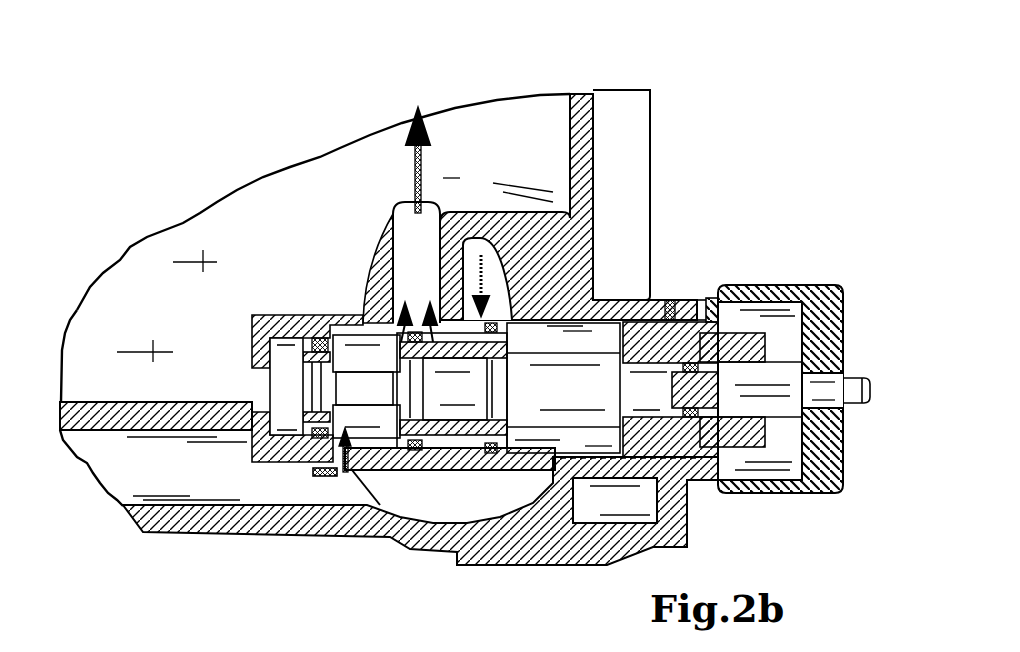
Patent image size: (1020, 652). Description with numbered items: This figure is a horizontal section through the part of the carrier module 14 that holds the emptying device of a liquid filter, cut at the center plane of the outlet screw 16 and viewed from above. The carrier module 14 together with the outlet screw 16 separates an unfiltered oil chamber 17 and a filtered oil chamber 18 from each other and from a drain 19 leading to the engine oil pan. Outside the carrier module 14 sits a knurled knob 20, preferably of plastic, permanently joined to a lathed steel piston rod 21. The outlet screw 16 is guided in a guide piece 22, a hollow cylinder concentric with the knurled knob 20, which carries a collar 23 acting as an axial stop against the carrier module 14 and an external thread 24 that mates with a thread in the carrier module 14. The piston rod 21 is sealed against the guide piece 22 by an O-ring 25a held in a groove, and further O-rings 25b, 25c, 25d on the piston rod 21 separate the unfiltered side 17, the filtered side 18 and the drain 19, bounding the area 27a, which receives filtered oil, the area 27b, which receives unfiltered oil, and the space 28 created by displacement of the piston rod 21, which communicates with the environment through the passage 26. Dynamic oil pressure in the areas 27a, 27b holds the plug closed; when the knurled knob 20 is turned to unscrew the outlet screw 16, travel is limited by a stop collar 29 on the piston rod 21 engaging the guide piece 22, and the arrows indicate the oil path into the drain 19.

The carrier module 14 is at (582, 100).
The outlet screw 16 is at (780, 173).
The unfiltered oil chamber 17 is at (134, 479).
The filtered oil chamber 18 is at (481, 252).
The drain 19 is at (402, 228).
The knurled knob 20 is at (820, 303).
The piston rod 21 is at (862, 404).
The guide piece 22 is at (748, 440).
The collar 23 is at (708, 300).
The external thread 24 is at (669, 292).
The O-ring 25a is at (693, 420).
The O-ring 25b is at (489, 458).
The O-ring 25c is at (414, 460).
The O-ring 25d is at (316, 328).
The passage 26 is at (260, 392).
The area receiving filtered oil 27a is at (527, 437).
The area receiving unfiltered oil 27b is at (355, 306).
The space 28 is at (285, 402).
The stop collar 29 is at (626, 382).